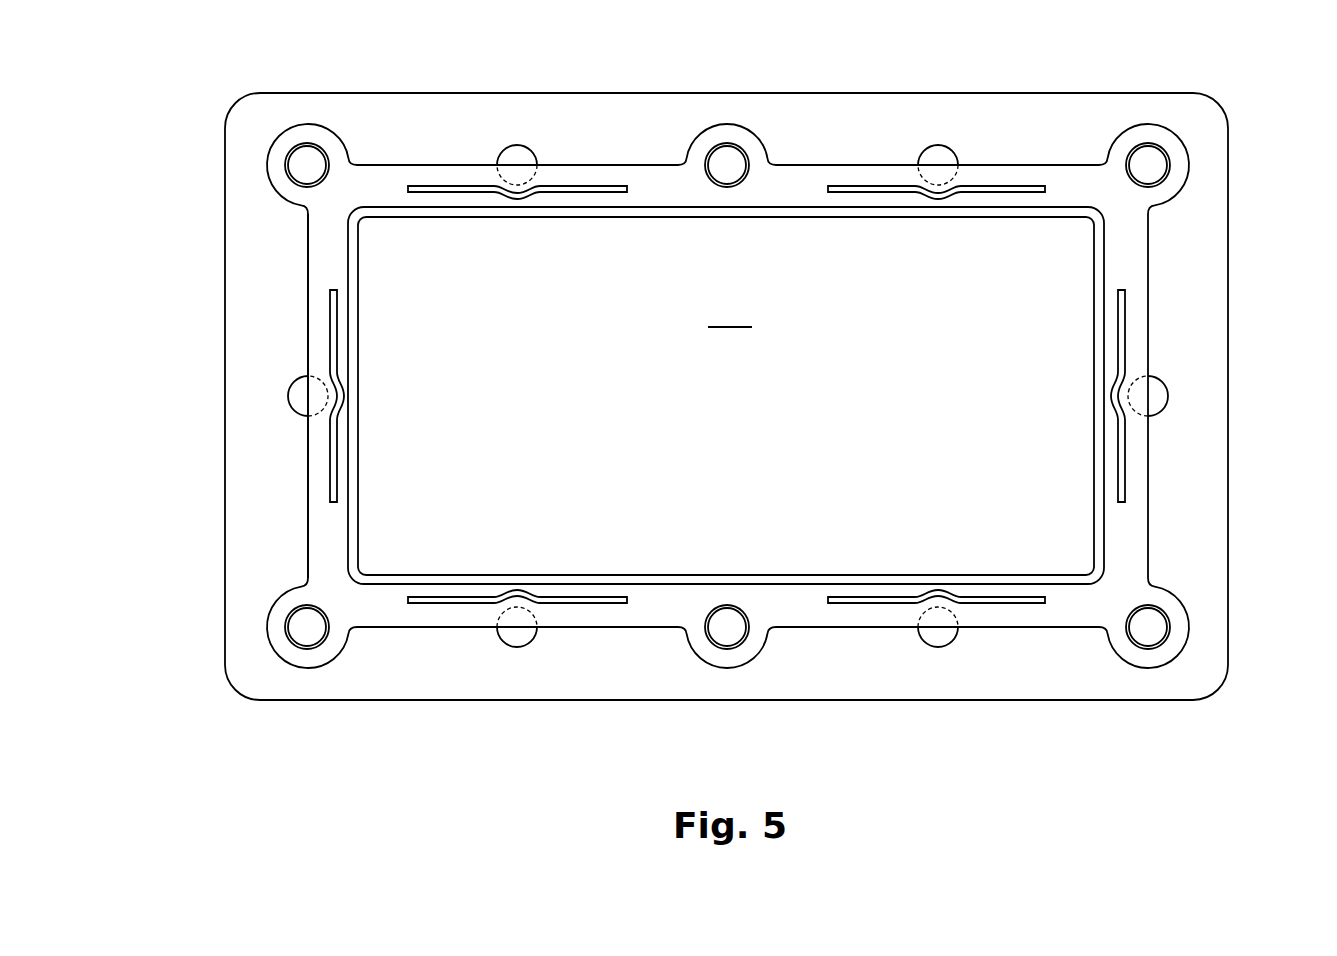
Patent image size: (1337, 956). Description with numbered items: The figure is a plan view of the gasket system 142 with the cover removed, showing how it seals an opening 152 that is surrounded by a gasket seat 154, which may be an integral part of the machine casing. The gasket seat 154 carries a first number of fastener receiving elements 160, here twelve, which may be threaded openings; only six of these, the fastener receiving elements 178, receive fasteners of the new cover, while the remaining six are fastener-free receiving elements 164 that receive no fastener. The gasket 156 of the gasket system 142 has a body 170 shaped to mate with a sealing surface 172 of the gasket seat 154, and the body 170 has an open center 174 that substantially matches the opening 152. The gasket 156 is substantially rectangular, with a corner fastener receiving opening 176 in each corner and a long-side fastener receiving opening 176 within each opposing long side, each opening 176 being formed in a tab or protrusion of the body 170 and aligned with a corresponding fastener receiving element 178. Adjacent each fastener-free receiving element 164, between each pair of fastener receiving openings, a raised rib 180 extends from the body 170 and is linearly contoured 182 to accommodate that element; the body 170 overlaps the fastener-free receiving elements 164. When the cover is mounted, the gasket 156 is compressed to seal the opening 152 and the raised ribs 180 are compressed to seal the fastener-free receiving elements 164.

The gasket system 142 is at (648, 340).
The opening 152 is at (731, 315).
The gasket seat 154 is at (263, 500).
The gasket 156 is at (386, 170).
The fastener receiving elements 160 is at (719, 396).
The fastener-free receiving elements 164 is at (518, 158).
The body 170 is at (810, 170).
The sealing surface 172 is at (290, 257).
The open center 174 is at (807, 217).
The fastener receiving opening 176 is at (334, 148).
The fastener receiving element 178 is at (300, 168).
The raised rib 180 is at (727, 394).
The contour 182 is at (520, 195).